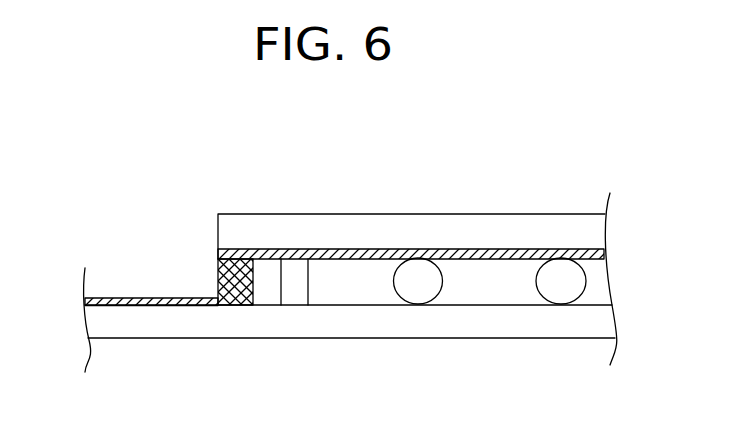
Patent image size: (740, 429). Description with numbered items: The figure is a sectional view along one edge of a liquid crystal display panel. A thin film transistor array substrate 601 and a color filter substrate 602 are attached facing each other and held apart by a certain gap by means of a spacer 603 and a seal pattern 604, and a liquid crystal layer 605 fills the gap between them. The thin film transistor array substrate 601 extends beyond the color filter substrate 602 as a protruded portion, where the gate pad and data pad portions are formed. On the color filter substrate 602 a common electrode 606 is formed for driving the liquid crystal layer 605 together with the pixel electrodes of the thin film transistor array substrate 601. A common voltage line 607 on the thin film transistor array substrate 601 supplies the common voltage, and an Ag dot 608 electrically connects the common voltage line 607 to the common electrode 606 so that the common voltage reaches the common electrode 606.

The thin film transistor array substrate 601 is at (505, 323).
The color filter substrate 602 is at (257, 233).
The spacer 603 is at (557, 288).
The seal pattern 604 is at (293, 290).
The liquid crystal layer 605 is at (472, 282).
The common electrode 606 is at (230, 252).
The common voltage line 607 is at (120, 300).
The Ag dot 608 is at (230, 276).